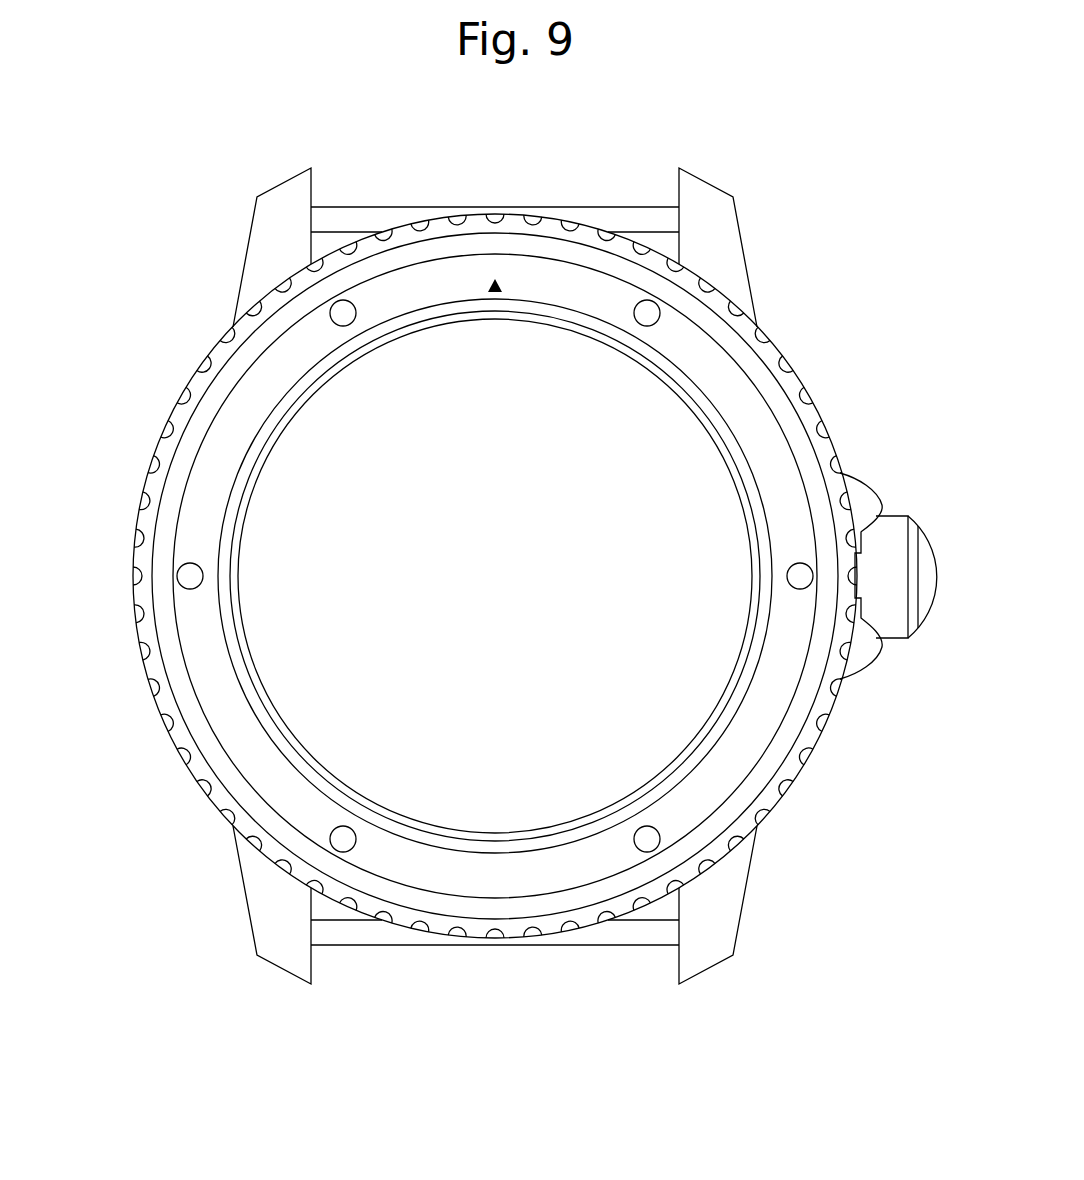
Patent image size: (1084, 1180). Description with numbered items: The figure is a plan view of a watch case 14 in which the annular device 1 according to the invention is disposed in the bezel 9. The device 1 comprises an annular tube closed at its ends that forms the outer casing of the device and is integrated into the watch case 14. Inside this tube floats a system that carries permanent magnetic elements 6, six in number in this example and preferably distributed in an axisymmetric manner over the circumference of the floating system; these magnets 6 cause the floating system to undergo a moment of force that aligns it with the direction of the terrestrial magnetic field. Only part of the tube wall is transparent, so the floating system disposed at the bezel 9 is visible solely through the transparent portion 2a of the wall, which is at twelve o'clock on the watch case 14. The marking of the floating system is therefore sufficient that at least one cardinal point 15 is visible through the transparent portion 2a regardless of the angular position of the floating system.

The watch case 14 is at (155, 288).
The bezel 9 is at (777, 344).
The transparent portion 2a is at (557, 283).
The device 1 is at (784, 492).
The cardinal point 15 is at (489, 279).
The permanent magnetic elements 6 is at (341, 313).